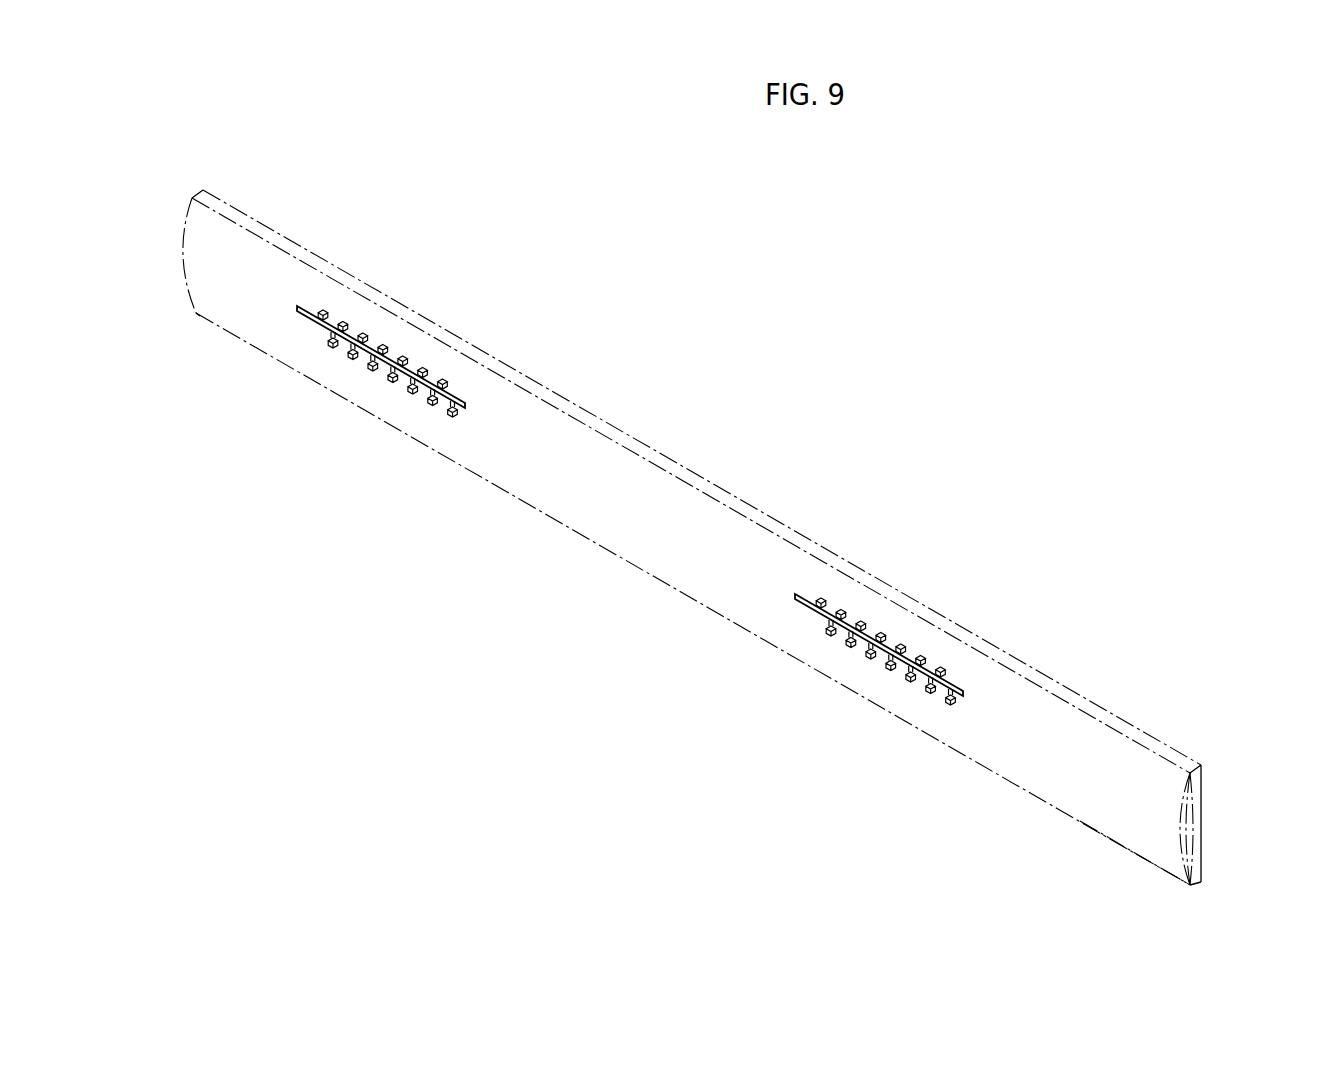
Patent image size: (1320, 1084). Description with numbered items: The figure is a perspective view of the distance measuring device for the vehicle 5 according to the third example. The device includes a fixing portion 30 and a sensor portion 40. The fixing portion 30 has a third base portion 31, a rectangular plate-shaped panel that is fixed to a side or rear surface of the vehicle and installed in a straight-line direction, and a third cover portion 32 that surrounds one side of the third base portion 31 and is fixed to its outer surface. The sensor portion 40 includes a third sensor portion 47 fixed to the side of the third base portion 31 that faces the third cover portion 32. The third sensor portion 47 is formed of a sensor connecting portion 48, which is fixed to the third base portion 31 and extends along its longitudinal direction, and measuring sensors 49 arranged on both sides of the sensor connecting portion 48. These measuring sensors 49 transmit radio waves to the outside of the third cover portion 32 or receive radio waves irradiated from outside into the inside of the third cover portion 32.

The distance measuring device for the vehicle 5 is at (190, 198).
The fixing portion 30 is at (686, 448).
The third base portion 31 is at (1201, 822).
The third cover portion 32 is at (1150, 818).
The sensor portion 40 is at (369, 374).
The third sensor portion 47 is at (470, 407).
The sensor connecting portion 48 is at (310, 306).
The measuring sensors 49 is at (403, 350).